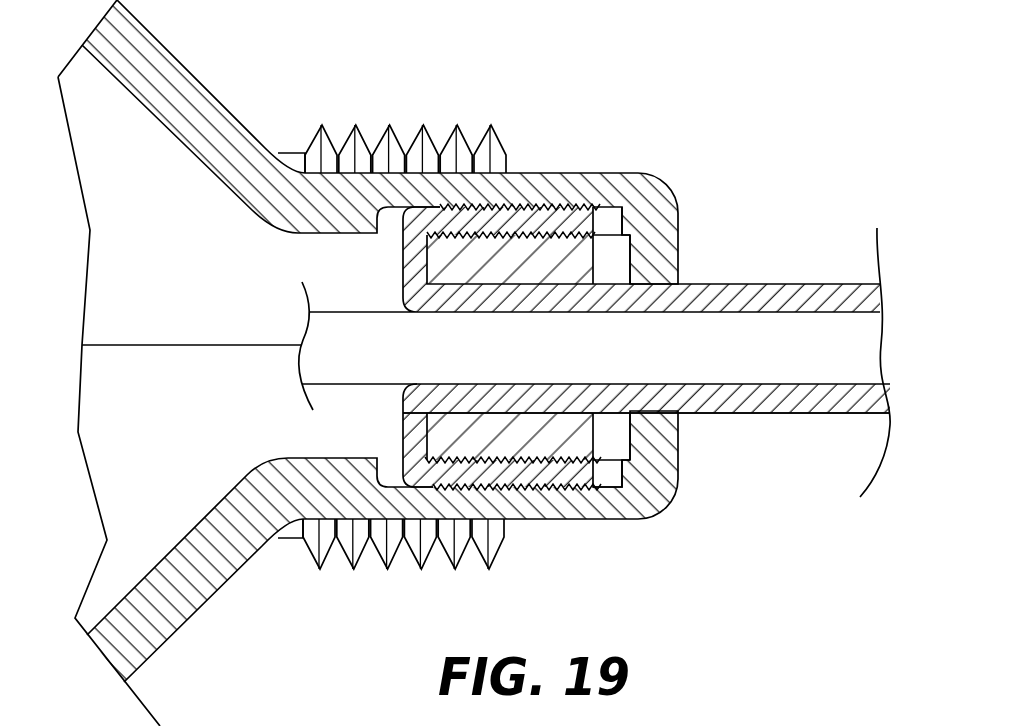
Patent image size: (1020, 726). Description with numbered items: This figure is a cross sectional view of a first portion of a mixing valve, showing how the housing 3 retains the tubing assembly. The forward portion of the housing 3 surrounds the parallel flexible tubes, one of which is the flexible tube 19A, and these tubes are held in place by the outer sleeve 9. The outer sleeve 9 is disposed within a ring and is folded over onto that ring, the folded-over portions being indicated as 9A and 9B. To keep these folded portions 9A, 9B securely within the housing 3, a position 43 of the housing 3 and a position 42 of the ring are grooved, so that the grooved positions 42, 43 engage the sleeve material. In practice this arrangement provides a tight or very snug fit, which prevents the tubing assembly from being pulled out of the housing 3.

The housing 3 is at (163, 65).
The outer sleeve 9 is at (712, 297).
The folded-over portion of outer sleeve 9A is at (590, 213).
The folded-over portion of outer sleeve 9B is at (586, 478).
The flexible tube 19A is at (760, 363).
The grooved position of ring 42 is at (453, 227).
The grooved position of housing 43 is at (512, 210).